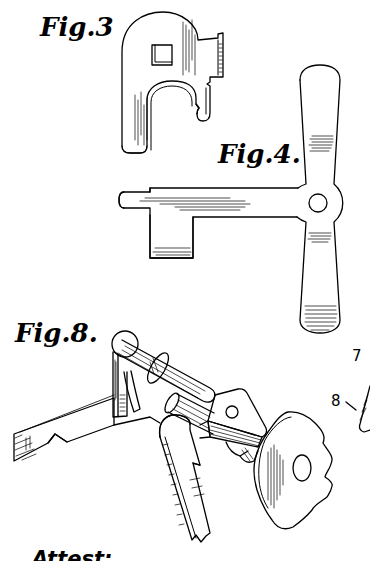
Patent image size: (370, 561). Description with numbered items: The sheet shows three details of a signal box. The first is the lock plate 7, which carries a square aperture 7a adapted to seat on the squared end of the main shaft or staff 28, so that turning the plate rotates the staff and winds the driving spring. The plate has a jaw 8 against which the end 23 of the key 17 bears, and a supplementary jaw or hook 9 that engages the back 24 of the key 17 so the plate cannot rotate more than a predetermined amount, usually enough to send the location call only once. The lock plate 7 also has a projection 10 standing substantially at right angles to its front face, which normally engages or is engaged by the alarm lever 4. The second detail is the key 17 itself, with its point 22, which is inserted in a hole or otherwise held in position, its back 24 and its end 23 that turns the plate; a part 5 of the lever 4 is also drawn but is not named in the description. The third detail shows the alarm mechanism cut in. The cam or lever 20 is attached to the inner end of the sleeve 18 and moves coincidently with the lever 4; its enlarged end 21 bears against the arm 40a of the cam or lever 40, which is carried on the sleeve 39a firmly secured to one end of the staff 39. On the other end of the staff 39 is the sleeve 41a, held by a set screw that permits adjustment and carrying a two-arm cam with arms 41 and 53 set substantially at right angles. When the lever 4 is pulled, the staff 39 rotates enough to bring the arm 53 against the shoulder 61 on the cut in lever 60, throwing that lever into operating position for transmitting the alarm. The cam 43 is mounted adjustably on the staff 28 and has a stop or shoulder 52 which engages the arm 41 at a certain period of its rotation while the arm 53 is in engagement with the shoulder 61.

In FIG. 3, the lock plate 7 is at (135, 70).
In FIG. 3, the square aperture 7a is at (165, 50).
In FIG. 3, the jaw 8 is at (127, 137).
In FIG. 3, the supplementary jaw or hook 9 is at (198, 117).
In FIG. 3, the projection 10 is at (225, 64).
In FIG. 4, the key 17 is at (253, 219).
In FIG. 4, the point of key 22 is at (121, 205).
In FIG. 4, the end of key 23 is at (172, 259).
In FIG. 4, the back of key 24 is at (165, 188).
In FIG. 8, the alarm lever 4 is at (32, 433).
In FIG. 8, the notch 5 is at (57, 440).
In FIG. 8, the cam or lever 40 is at (140, 338).
In FIG. 8, the arm of cam 40a is at (113, 393).
In FIG. 8, the sleeve 39a is at (147, 355).
In FIG. 8, the sleeve 18 is at (182, 372).
In FIG. 8, the staff 39 is at (201, 390).
In FIG. 8, the sleeve 41a is at (219, 398).
In FIG. 8, the arm of two-arm cam 41 is at (258, 427).
In FIG. 8, the arm of two-arm cam 53 is at (205, 431).
In FIG. 8, the main shaft or staff 28 is at (236, 448).
In FIG. 8, the stop or shoulder 52 is at (247, 461).
In FIG. 8, the cam 43 is at (293, 470).
In FIG. 8, the cut in lever 60 is at (180, 516).
In FIG. 8, the shoulder 61 is at (198, 452).
In FIG. 8, the cam or lever 20 is at (164, 420).
In FIG. 8, the enlarged end 21 is at (125, 425).